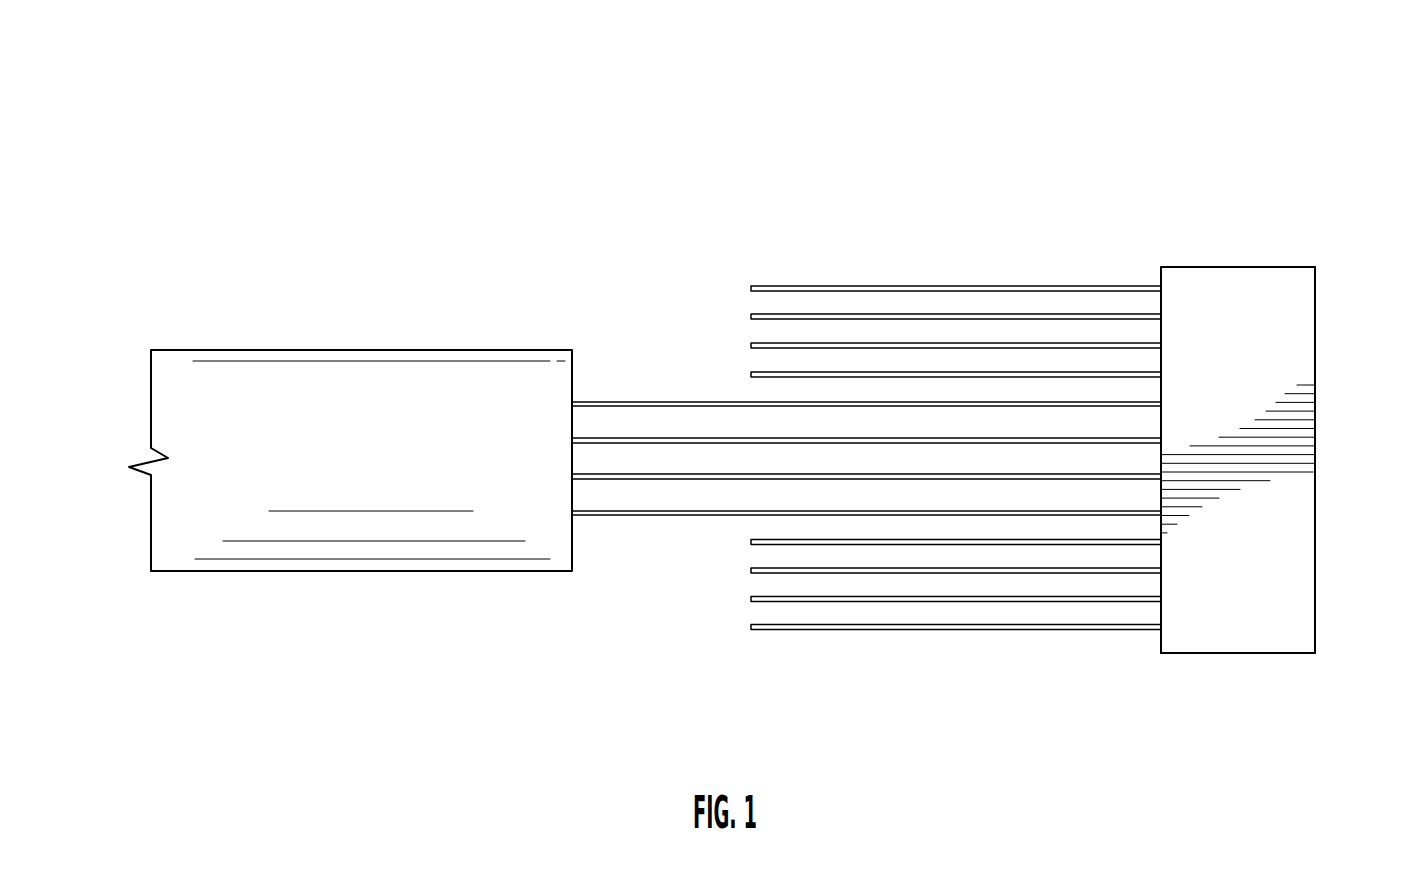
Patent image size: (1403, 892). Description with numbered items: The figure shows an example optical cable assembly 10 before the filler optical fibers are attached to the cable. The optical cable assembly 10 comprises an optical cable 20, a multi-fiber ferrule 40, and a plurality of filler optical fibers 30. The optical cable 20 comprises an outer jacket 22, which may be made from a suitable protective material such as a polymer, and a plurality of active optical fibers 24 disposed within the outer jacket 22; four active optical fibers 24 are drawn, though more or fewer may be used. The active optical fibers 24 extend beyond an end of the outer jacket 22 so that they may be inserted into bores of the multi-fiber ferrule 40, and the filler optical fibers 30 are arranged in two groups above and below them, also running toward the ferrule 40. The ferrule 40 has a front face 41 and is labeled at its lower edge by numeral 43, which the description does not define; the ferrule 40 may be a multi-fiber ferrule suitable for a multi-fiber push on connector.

The optical cable assembly 10 is at (380, 83).
The optical cable 20 is at (209, 265).
The outer jacket 22 is at (333, 375).
The active optical fibers 24 is at (638, 367).
The filler optical fibers 30 is at (733, 261).
The multi-fiber ferrule 40 is at (1258, 653).
The front face 41 is at (1315, 607).
The inner edge of connector block 43 is at (1158, 644).